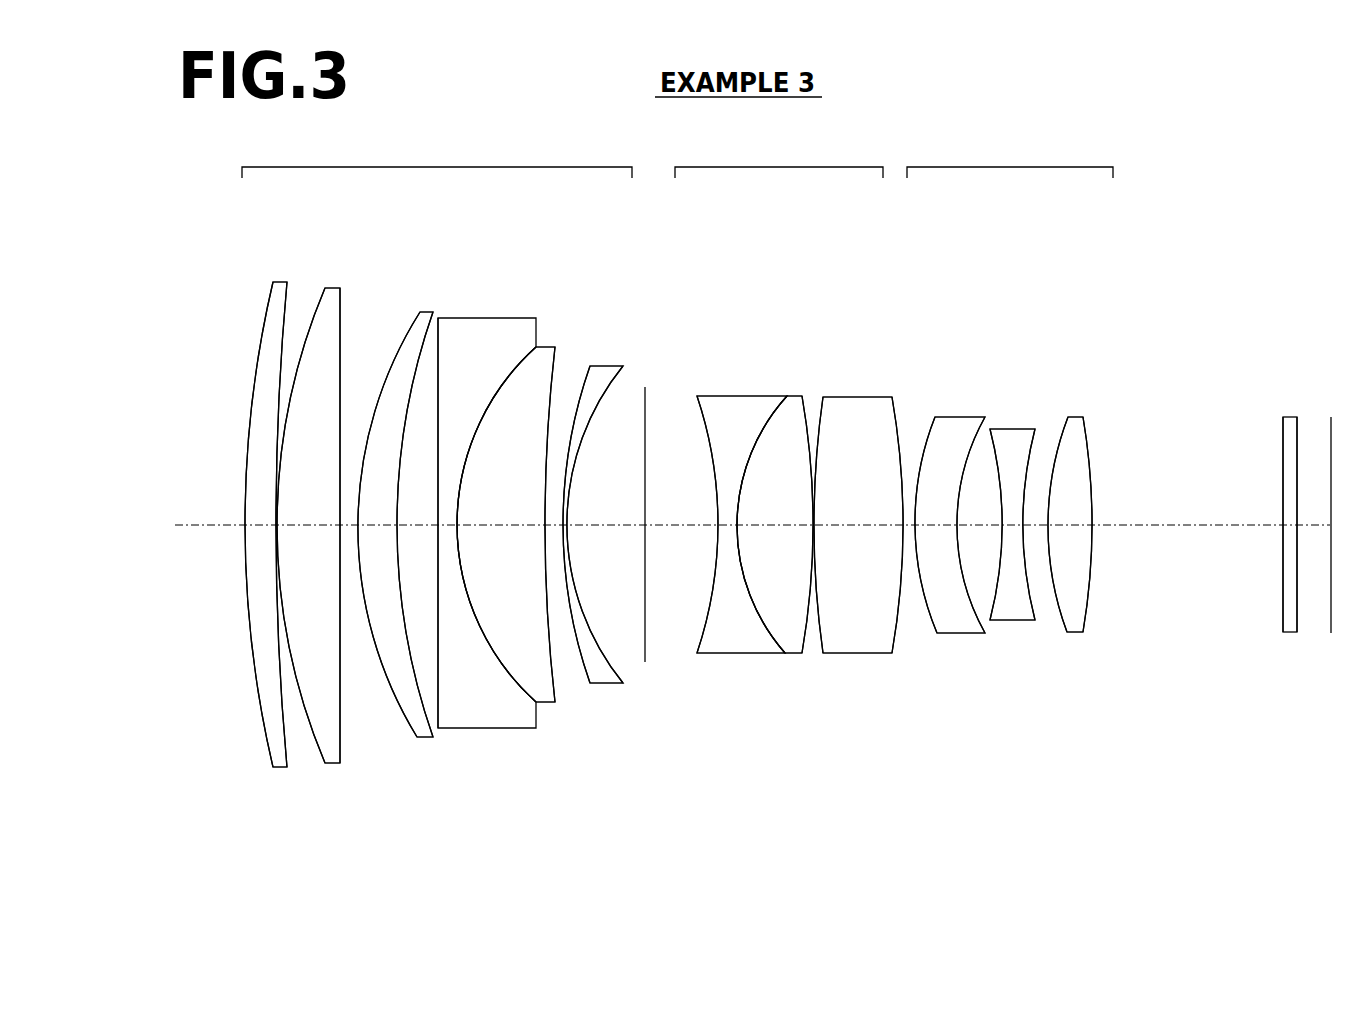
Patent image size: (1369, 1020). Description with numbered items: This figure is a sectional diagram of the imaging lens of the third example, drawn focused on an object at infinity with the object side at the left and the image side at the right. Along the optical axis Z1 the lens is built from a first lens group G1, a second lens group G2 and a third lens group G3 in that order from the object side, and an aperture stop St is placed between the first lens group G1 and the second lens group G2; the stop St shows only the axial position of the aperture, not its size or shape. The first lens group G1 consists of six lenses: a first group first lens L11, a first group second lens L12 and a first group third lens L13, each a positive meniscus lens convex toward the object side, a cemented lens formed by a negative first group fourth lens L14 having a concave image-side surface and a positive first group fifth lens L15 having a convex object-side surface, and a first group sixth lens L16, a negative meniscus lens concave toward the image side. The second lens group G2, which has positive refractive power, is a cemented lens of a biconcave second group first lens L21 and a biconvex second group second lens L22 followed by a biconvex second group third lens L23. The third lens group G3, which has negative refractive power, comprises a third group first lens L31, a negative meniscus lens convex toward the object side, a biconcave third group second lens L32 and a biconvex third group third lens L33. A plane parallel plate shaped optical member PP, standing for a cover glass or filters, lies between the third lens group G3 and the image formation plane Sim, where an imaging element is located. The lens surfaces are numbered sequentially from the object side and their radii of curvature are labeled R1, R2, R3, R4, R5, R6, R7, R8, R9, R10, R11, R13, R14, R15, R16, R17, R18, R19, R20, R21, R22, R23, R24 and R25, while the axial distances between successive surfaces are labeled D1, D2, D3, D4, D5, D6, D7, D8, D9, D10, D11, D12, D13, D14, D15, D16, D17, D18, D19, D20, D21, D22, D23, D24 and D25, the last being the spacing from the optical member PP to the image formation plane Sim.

The first lens group G1 is at (437, 158).
The second lens group G2 is at (779, 158).
The third lens group G3 is at (1010, 158).
The first group first lens L11 is at (280, 282).
The first group second lens L12 is at (330, 288).
The first group third lens L13 is at (425, 312).
The first group fourth lens L14 is at (485, 318).
The first group fifth lens L15 is at (550, 347).
The first group sixth lens L16 is at (605, 366).
The second group first lens L21 is at (742, 396).
The second group second lens L22 is at (793, 396).
The second group third lens L23 is at (858, 397).
The third group first lens L31 is at (945, 417).
The third group second lens L32 is at (1024, 429).
The third group third lens L33 is at (1075, 417).
The aperture stop St is at (645, 387).
The plane parallel plate shaped optical member PP is at (1288, 417).
The image formation plane Sim is at (1331, 430).
The optical axis Z1 is at (203, 525).
The surface distance D1 is at (260, 525).
The surface distance D2 is at (277, 525).
The surface distance D3 is at (304, 514).
The surface distance D4 is at (342, 525).
The surface distance D5 is at (377, 525).
The surface distance D6 is at (428, 525).
The surface distance D7 is at (450, 525).
The surface distance D8 is at (504, 514).
The surface distance D9 is at (550, 525).
The surface distance D10 is at (568, 525).
The surface distance D11 is at (603, 514).
The surface distance D12 is at (685, 514).
The surface distance D13 is at (728, 525).
The surface distance D14 is at (780, 514).
The surface distance D15 is at (815, 525).
The surface distance D16 is at (863, 514).
The surface distance D17 is at (907, 525).
The surface distance D18 is at (943, 525).
The surface distance D19 is at (982, 525).
The surface distance D20 is at (1014, 525).
The surface distance D21 is at (1038, 525).
The surface distance D22 is at (1068, 525).
The surface distance D23 is at (1178, 514).
The surface distance D24 is at (1290, 525).
The surface distance D25 is at (1313, 525).
The radius of curvature of first surface R1 is at (262, 716).
The radius of curvature of second surface R2 is at (273, 765).
The radius of curvature of third surface R3 is at (305, 672).
The radius of curvature of fourth surface R4 is at (338, 762).
The radius of curvature of fifth surface R5 is at (383, 685).
The radius of curvature of sixth surface R6 is at (420, 690).
The radius of curvature of seventh surface R7 is at (438, 733).
The radius of curvature of eighth surface R8 is at (517, 682).
The radius of curvature of ninth surface R9 is at (552, 700).
The radius of curvature of tenth surface R10 is at (590, 678).
The radius of curvature of eleventh surface R11 is at (624, 664).
The radius of curvature of thirteenth surface R13 is at (697, 650).
The radius of curvature of fourteenth surface R14 is at (753, 632).
The radius of curvature of fifteenth surface R15 is at (805, 650).
The radius of curvature of sixteenth surface R16 is at (816, 640).
The radius of curvature of seventeenth surface R17 is at (892, 652).
The radius of curvature of eighteenth surface R18 is at (937, 633).
The radius of curvature of nineteenth surface R19 is at (985, 633).
The radius of curvature of twentieth surface R20 is at (990, 630).
The radius of curvature of twenty-first surface R21 is at (1035, 620).
The radius of curvature of twenty-second surface R22 is at (1067, 632).
The radius of curvature of twenty-third surface R23 is at (1085, 632).
The radius of curvature of twenty-fourth surface R24 is at (1283, 632).
The radius of curvature of twenty-fifth surface R25 is at (1297, 632).